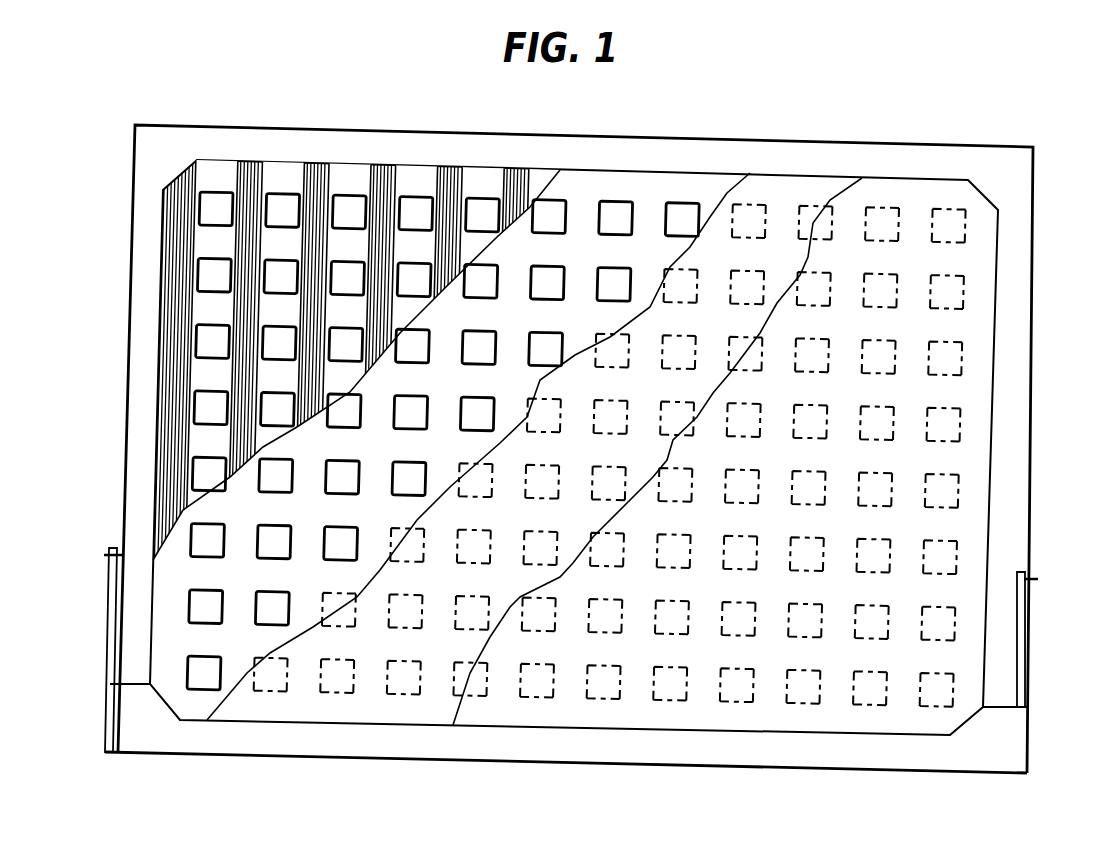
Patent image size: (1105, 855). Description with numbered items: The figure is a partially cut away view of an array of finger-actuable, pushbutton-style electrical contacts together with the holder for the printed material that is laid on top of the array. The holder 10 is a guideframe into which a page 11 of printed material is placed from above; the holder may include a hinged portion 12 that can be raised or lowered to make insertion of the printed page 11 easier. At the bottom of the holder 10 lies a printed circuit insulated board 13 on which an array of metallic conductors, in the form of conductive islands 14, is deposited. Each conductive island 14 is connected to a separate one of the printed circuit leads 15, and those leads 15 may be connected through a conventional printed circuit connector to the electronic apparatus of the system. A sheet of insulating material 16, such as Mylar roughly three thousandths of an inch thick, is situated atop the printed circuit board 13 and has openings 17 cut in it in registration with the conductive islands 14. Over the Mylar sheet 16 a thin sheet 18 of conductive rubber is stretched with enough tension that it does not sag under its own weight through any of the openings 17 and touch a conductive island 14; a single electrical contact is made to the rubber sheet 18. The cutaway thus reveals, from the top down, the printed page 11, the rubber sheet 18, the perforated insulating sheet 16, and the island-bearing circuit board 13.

The holder 10 is at (1020, 266).
The page 11 is at (927, 195).
The hinged portion 12 is at (875, 758).
The printed circuit insulated board 13 is at (142, 346).
The conductive islands 14 is at (353, 200).
The printed circuit leads 15 is at (200, 172).
The sheet of insulating material 16 is at (580, 183).
The openings 17 is at (683, 213).
The thin sheet of conductive rubber 18 is at (780, 197).